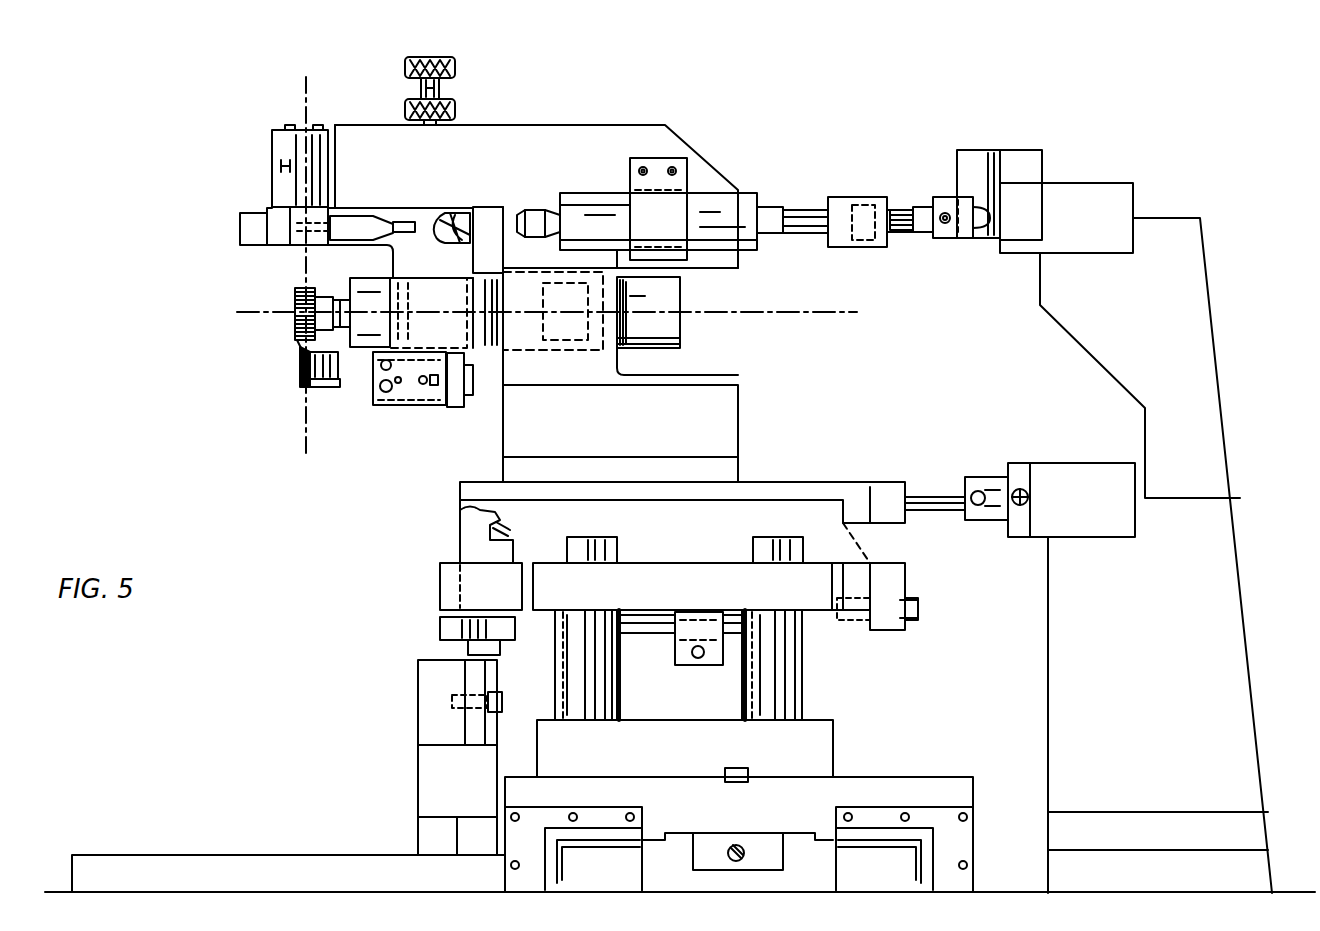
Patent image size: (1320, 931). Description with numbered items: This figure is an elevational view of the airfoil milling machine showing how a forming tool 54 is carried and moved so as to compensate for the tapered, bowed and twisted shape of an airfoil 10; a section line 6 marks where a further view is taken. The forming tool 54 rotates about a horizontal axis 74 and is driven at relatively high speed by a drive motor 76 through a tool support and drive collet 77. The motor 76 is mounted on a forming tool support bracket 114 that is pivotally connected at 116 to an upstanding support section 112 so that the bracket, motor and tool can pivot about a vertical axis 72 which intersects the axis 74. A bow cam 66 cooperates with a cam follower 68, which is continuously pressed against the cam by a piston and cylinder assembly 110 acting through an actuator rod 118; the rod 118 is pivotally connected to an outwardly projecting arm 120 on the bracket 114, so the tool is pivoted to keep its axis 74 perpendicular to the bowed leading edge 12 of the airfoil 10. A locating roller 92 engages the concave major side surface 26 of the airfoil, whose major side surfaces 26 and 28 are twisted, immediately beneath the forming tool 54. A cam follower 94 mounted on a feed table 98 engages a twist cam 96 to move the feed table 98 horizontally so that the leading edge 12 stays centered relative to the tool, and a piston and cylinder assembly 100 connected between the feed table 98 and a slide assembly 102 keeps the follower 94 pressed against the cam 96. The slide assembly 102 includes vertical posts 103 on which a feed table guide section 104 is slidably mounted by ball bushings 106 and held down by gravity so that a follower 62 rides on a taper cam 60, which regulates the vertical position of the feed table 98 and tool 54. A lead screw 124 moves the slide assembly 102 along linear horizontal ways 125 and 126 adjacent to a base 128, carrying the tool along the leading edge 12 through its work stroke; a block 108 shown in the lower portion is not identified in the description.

The section line 6- 6 is at (275, 45).
The airfoil 10 is at (292, 365).
The leading edge 12 is at (300, 330).
The major side surface 26 is at (316, 388).
The major side surface 28 is at (302, 381).
The forming tool 54 is at (300, 310).
The taper cam 60 is at (480, 675).
The follower 62 is at (462, 652).
The bow cam 66 is at (995, 163).
The cam follower 68 is at (955, 240).
The vertical axis 72 is at (306, 97).
The horizontal axis of rotation 74 is at (240, 310).
The drive motor 76 is at (665, 326).
The drive collet 77 is at (316, 296).
The roller 92 is at (337, 378).
The cam follower 94 is at (960, 480).
The twist cam 96 is at (1025, 470).
The feed table 98 is at (762, 482).
The piston and cylinder assembly 100 is at (652, 618).
The slide assembly 102 is at (875, 655).
The vertical posts 103 is at (570, 700).
The feed table guide section 104 is at (815, 515).
The ball bushings 106 is at (618, 612).
The base block 108 is at (686, 720).
The piston and cylinder assembly 110 is at (745, 205).
The support section 112 is at (565, 132).
The forming tool support bracket 114 is at (433, 268).
The pivotal connection 116 is at (272, 183).
The actuator rod 118 is at (526, 215).
The arm 120 is at (330, 214).
The lead screw 124 is at (738, 845).
The way 125 is at (620, 863).
The way 126 is at (873, 863).
The base 128 is at (400, 865).